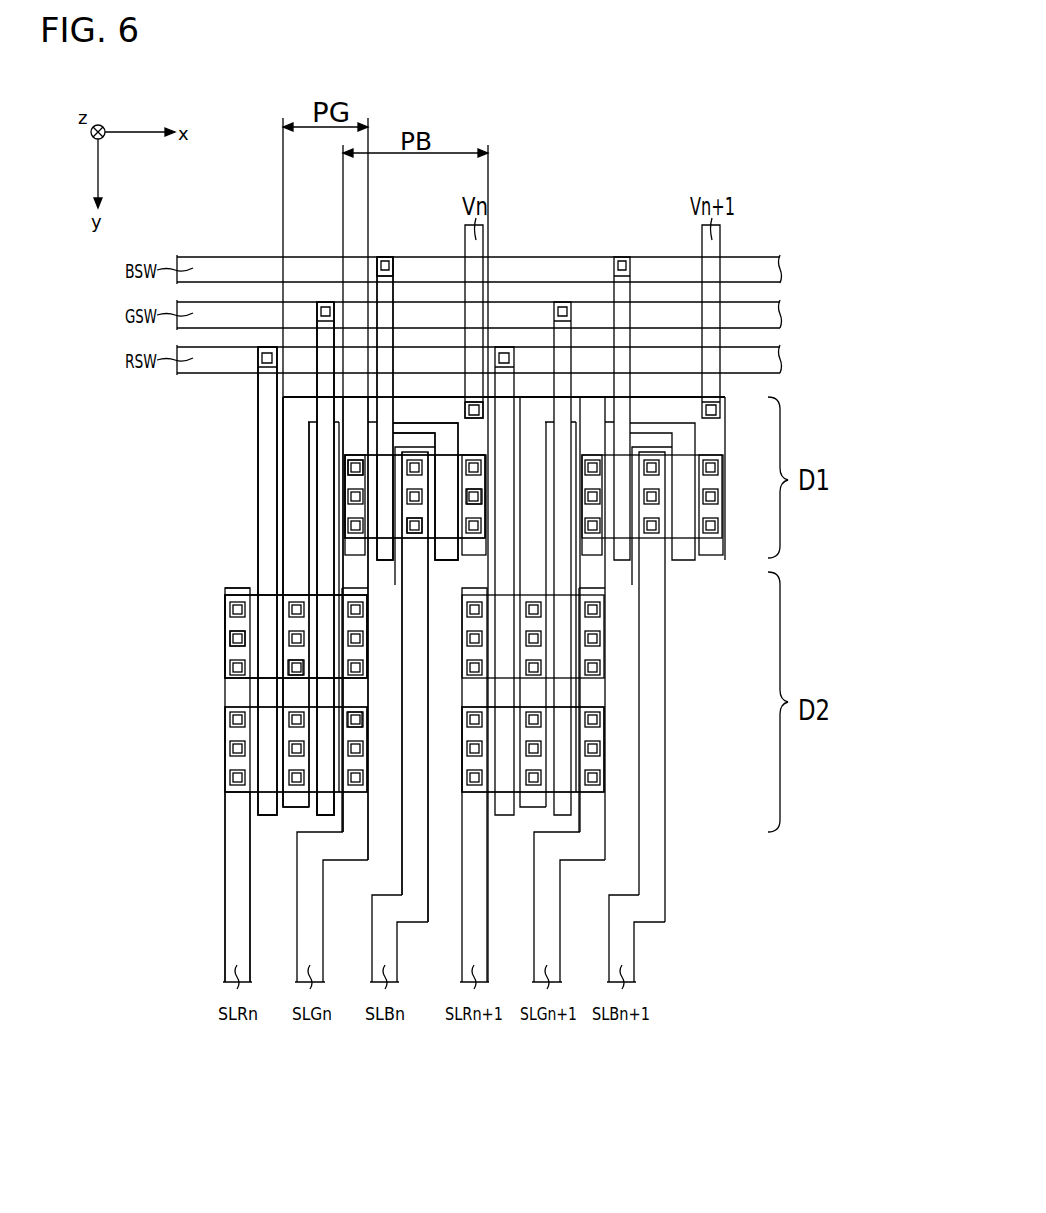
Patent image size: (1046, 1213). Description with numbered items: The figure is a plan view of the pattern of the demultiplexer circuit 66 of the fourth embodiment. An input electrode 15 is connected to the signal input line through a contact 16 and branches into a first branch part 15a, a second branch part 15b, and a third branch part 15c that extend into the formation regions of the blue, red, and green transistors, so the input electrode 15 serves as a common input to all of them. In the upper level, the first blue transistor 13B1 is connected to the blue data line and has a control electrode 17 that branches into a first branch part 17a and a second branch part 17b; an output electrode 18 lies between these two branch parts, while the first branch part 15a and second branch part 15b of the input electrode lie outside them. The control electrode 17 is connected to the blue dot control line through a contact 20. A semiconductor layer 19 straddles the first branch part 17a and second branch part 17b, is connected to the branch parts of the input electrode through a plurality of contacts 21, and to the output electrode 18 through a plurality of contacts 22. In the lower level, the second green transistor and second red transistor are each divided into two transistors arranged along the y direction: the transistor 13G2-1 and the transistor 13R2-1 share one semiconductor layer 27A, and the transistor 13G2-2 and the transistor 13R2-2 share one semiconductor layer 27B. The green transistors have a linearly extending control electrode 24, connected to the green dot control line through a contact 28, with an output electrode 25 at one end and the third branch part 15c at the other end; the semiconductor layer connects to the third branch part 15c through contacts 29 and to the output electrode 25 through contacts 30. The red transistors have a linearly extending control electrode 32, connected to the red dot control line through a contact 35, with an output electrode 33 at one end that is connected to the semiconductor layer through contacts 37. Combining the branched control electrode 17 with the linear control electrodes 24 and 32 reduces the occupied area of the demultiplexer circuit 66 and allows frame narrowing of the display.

The demultiplexer circuit 66 is at (519, 138).
The contact 35 is at (265, 357).
The contact 28 is at (325, 312).
The contact 20 is at (385, 268).
The control electrode 17 is at (388, 328).
The semiconductor layer 19 is at (444, 452).
The contact 16 is at (478, 410).
The input electrode 15 is at (290, 408).
The first branch part 15a is at (473, 438).
The second branch part 15b is at (355, 438).
The third branch part 15c is at (297, 568).
The contacts 21 is at (353, 468).
The contacts 22 is at (414, 527).
The first blue transistor 13B1 is at (315, 516).
The semiconductor layer 27A is at (237, 590).
The control electrode 32 is at (265, 620).
The contacts 37 is at (237, 637).
The transistor 13R2-1 is at (203, 650).
The contacts 29 is at (297, 677).
The contacts 30 is at (355, 718).
The control electrode 24 is at (325, 763).
The semiconductor layer 27B is at (237, 792).
The output electrode 33 is at (237, 837).
The transistor 13R2-2 is at (260, 834).
The transistor 13G2-2 is at (349, 835).
The transistor 13G2-1 is at (587, 738).
The first branch part 17a is at (387, 555).
The second branch part 17b is at (445, 553).
The output electrode 18 is at (415, 690).
The output electrode 25 is at (355, 814).